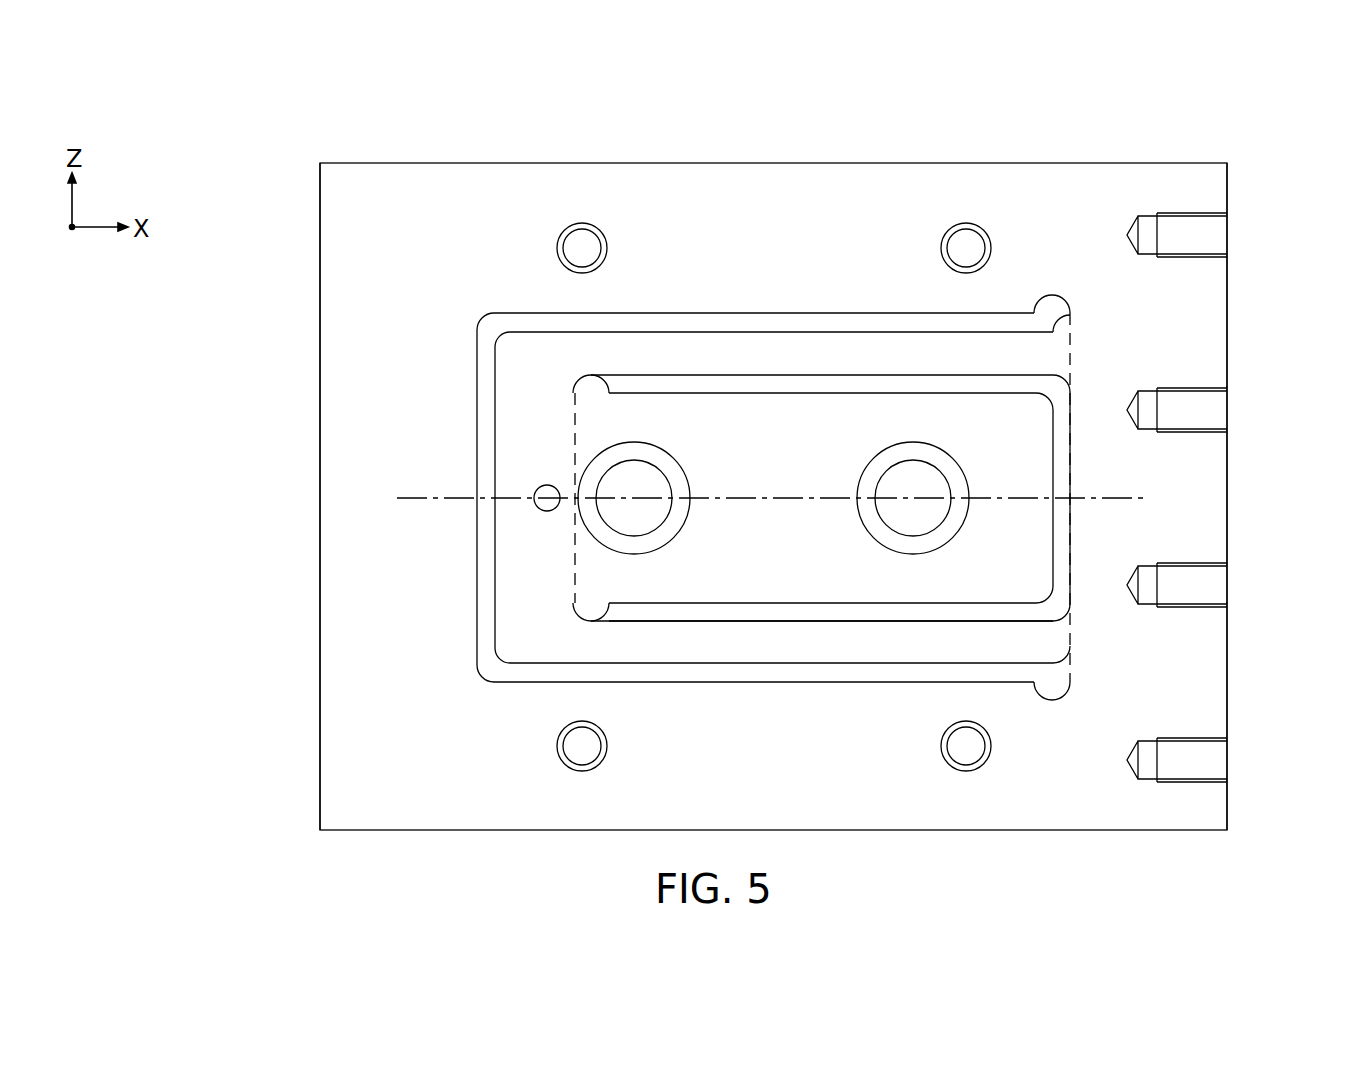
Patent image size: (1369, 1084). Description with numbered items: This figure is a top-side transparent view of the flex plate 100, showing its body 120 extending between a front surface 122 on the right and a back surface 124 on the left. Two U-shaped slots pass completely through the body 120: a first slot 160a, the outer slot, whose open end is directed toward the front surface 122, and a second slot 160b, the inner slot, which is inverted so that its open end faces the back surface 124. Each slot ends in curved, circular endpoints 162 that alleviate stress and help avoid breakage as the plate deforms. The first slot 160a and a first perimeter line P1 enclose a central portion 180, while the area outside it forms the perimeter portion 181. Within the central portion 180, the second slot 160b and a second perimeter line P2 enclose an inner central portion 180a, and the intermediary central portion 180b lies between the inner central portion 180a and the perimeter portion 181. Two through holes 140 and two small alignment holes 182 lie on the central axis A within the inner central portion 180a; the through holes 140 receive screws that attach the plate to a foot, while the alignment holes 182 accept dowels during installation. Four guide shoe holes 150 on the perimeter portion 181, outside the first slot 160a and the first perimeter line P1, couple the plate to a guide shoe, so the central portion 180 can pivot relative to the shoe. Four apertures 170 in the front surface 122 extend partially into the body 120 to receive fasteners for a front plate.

The flex plate 100 is at (284, 188).
The body 120 is at (340, 326).
The front surface 122 is at (1237, 810).
The back surface 124 is at (318, 478).
The through holes 140 is at (662, 496).
The guide shoe holes 150 is at (590, 221).
The first slot 160a is at (478, 558).
The second slot 160b is at (969, 617).
The endpoints 162 is at (1068, 302).
The apertures 170 is at (1234, 417).
The central portion 180 is at (1040, 436).
The inner central portion 180a is at (792, 483).
The intermediary central portion 180b is at (630, 363).
The perimeter portion 181 is at (455, 245).
The alignment holes 182 is at (534, 495).
The central axis A is at (403, 495).
The first perimeter line P1 is at (1072, 647).
The second perimeter line P2 is at (574, 452).